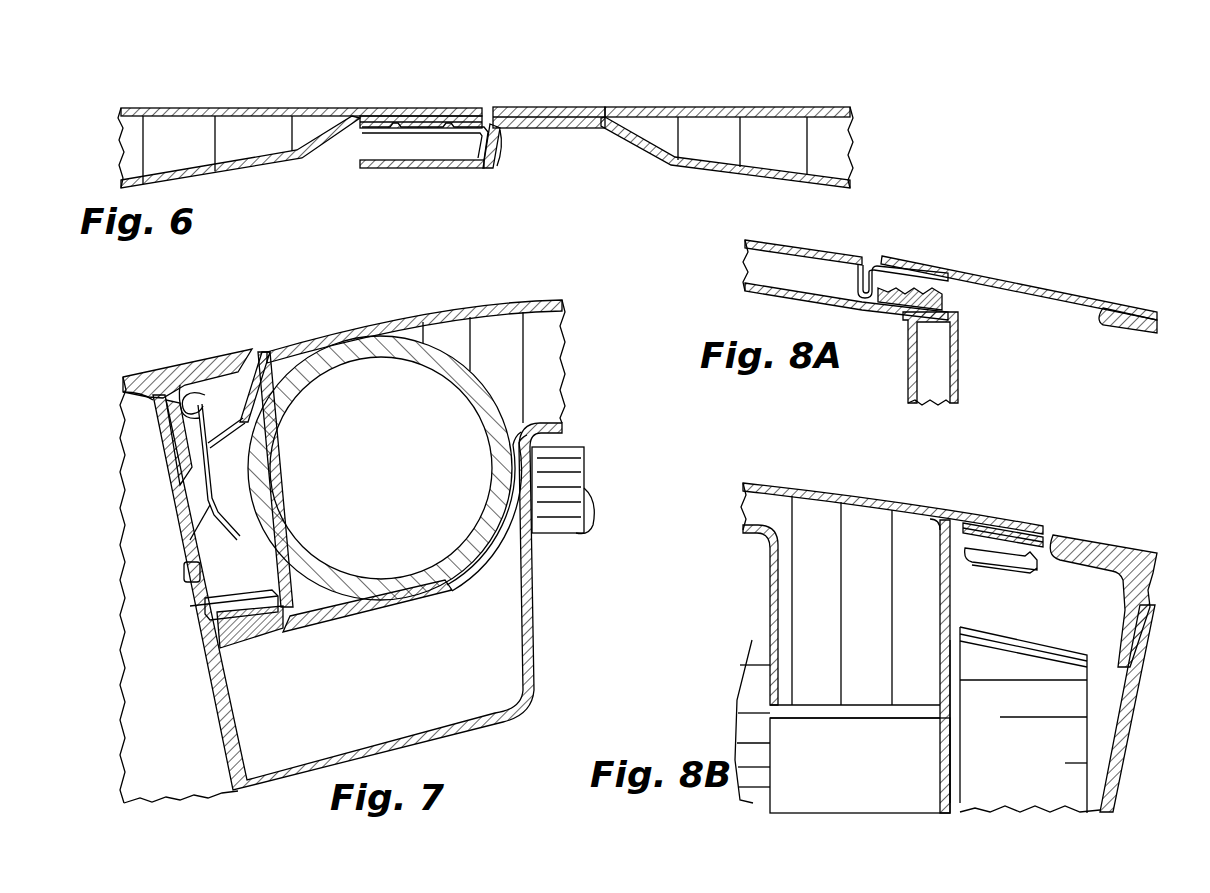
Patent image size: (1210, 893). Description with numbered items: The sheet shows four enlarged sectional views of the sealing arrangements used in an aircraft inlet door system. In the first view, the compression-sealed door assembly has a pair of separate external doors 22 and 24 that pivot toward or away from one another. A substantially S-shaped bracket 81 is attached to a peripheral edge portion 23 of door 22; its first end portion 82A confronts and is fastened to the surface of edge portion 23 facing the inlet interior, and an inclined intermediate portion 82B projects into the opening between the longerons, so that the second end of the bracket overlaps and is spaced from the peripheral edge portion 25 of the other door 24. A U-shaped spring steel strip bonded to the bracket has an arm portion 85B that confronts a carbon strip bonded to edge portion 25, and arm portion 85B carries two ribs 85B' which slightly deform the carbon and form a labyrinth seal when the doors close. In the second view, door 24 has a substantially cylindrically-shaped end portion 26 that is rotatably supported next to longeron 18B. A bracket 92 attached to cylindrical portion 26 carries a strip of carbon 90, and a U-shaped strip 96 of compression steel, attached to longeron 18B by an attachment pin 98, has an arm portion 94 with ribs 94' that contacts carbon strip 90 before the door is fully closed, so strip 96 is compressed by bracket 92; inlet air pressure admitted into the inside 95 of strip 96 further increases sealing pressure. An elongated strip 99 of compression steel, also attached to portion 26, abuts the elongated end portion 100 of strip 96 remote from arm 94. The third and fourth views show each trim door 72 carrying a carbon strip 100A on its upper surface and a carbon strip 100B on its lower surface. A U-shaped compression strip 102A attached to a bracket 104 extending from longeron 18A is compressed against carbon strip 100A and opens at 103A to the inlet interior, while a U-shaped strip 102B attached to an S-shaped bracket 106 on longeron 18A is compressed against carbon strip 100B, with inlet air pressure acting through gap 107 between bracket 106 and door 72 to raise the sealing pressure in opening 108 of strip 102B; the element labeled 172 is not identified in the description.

In FIG. 6, the external door 22 is at (694, 107).
In FIG. 6, the peripheral edge portion 23 is at (536, 107).
In FIG. 6, the external door 24 is at (266, 108).
In FIG. 7, the external door 24 is at (498, 300).
In FIG. 6, the peripheral edge portion 25 is at (425, 116).
In FIG. 7, the cylindrically-shaped end portion 26 is at (380, 468).
In FIG. 6, the bracket 81 is at (488, 170).
In FIG. 6, the first end portion 82A is at (566, 130).
In FIG. 6, the intermediate portion 82B is at (503, 142).
In FIG. 6, the arm portion 85B is at (387, 160).
In FIG. 6, the ribs 85B' is at (436, 87).
In FIG. 7, the longeron 18B is at (206, 679).
In FIG. 7, the strip of carbon 90 is at (255, 642).
In FIG. 7, the bracket 92 is at (305, 628).
In FIG. 7, the arm portion 94 is at (174, 636).
In FIG. 7, the ribs 94' is at (292, 663).
In FIG. 7, the inside 95 is at (212, 610).
In FIG. 7, the U-shaped strip 96 is at (252, 594).
In FIG. 7, the attachment pin 98 is at (184, 572).
In FIG. 7, the elongated strip 99 is at (224, 442).
In FIG. 7, the elongated end portion 100 is at (212, 395).
In FIG. 8A, the trim door 72 is at (769, 241).
In FIG. 8A, the carbon strip 100A is at (884, 315).
In FIG. 8A, the U-shaped strip 102A is at (880, 266).
In FIG. 8A, the opening 103A is at (955, 285).
In FIG. 8A, the bracket 104 is at (1005, 258).
In FIG. 8A, the longeron 18A is at (1137, 334).
In FIG. 8B, the longeron 18A is at (1146, 641).
In FIG. 8B, the carbon strip 100B is at (976, 526).
In FIG. 8B, the U-shaped strip 102B is at (978, 574).
In FIG. 8B, the S-shaped bracket 106 is at (1040, 568).
In FIG. 8B, the gap 107 is at (966, 568).
In FIG. 8B, the opening 108 is at (965, 552).
In FIG. 8B, the panel 172 is at (768, 587).